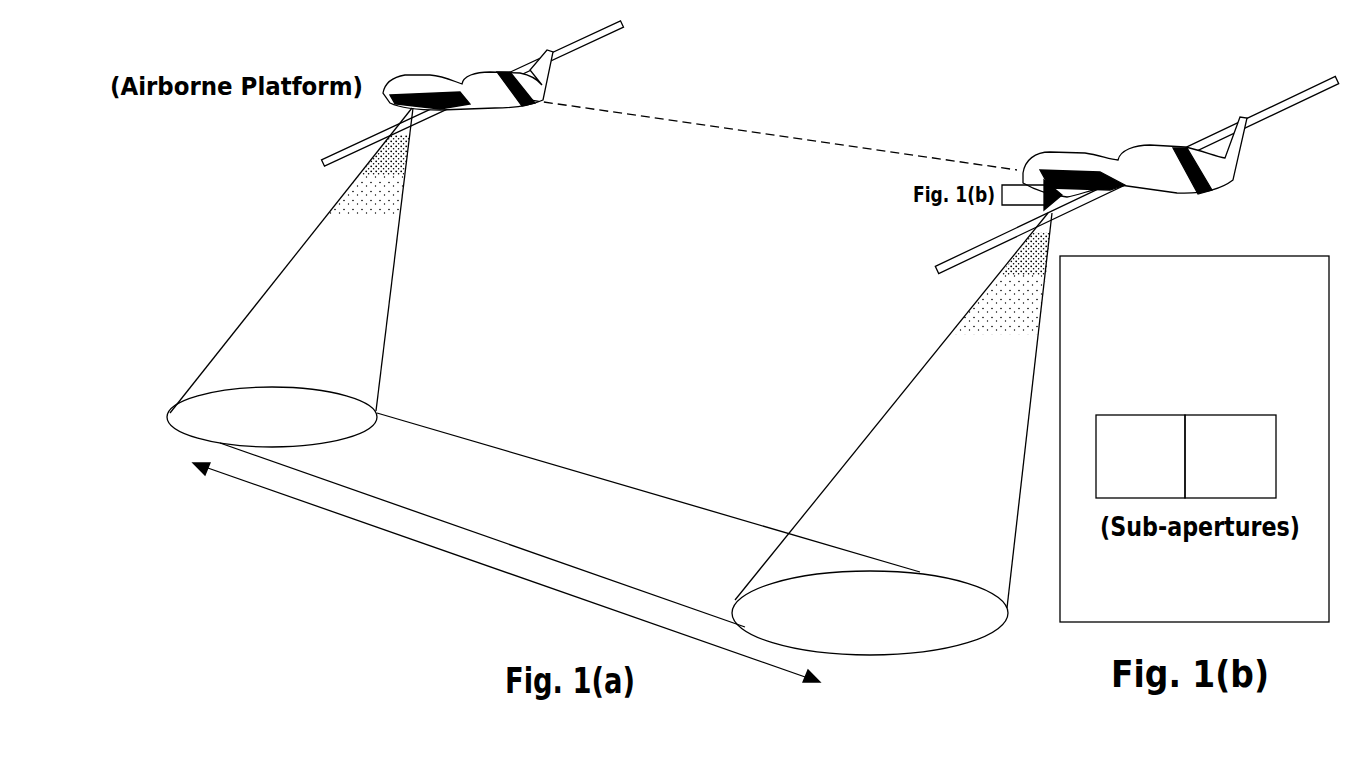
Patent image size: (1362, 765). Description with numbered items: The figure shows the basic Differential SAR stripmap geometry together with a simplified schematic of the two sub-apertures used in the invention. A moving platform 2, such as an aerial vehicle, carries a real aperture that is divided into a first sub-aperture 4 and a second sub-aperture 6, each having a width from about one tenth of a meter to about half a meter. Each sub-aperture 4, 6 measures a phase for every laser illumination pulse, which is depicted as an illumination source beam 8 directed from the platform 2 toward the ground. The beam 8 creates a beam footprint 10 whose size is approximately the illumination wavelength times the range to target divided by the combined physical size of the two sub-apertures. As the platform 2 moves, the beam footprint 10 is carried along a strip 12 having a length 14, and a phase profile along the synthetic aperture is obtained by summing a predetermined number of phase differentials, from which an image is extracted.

In FIG. 1A, the moving platform 2 is at (1063, 151).
In FIG. 1B, the first sub-aperture 4 is at (1138, 415).
In FIG. 1B, the second sub-aperture 6 is at (1238, 415).
In FIG. 1A, the illumination source beam 8 is at (923, 437).
In FIG. 1A, the beam footprint 10 is at (927, 652).
In FIG. 1A, the strip 12 is at (545, 460).
In FIG. 1A, the length 14 is at (430, 545).